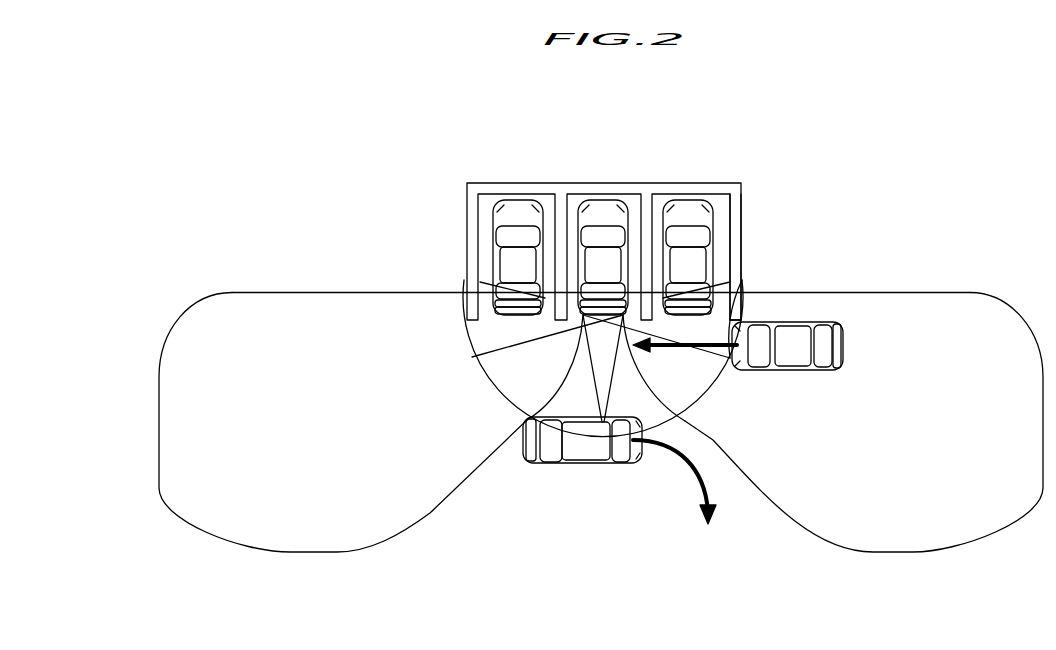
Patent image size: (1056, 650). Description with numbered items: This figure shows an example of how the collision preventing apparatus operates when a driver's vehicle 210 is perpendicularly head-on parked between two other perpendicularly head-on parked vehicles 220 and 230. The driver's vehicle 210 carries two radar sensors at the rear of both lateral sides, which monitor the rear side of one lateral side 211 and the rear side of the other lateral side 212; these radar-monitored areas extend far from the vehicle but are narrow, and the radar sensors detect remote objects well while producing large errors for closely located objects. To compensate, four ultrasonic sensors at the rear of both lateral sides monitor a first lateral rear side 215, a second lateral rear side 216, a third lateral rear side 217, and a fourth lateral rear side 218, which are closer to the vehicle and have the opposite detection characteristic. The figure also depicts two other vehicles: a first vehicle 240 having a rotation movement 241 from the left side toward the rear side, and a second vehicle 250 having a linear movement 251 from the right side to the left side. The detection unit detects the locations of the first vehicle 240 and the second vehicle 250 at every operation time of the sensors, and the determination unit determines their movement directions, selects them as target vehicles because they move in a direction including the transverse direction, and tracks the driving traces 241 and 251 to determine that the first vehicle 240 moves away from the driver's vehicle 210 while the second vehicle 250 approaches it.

The driver's vehicle 210 is at (603, 198).
The other perpendicularly head-on parked vehicle 220 is at (518, 198).
The other perpendicularly head-on parked vehicle 230 is at (687, 198).
The rear side of one lateral side 211 is at (272, 297).
The rear side of the other lateral side 212 is at (935, 297).
The first lateral rear side 215 is at (472, 333).
The second lateral rear side 216 is at (502, 373).
The third lateral rear side 217 is at (695, 380).
The fourth lateral rear side 218 is at (743, 312).
The first vehicle 240 is at (558, 465).
The rotation movement 241 is at (685, 462).
The second vehicle 250 is at (813, 322).
The linear movement 251 is at (740, 305).